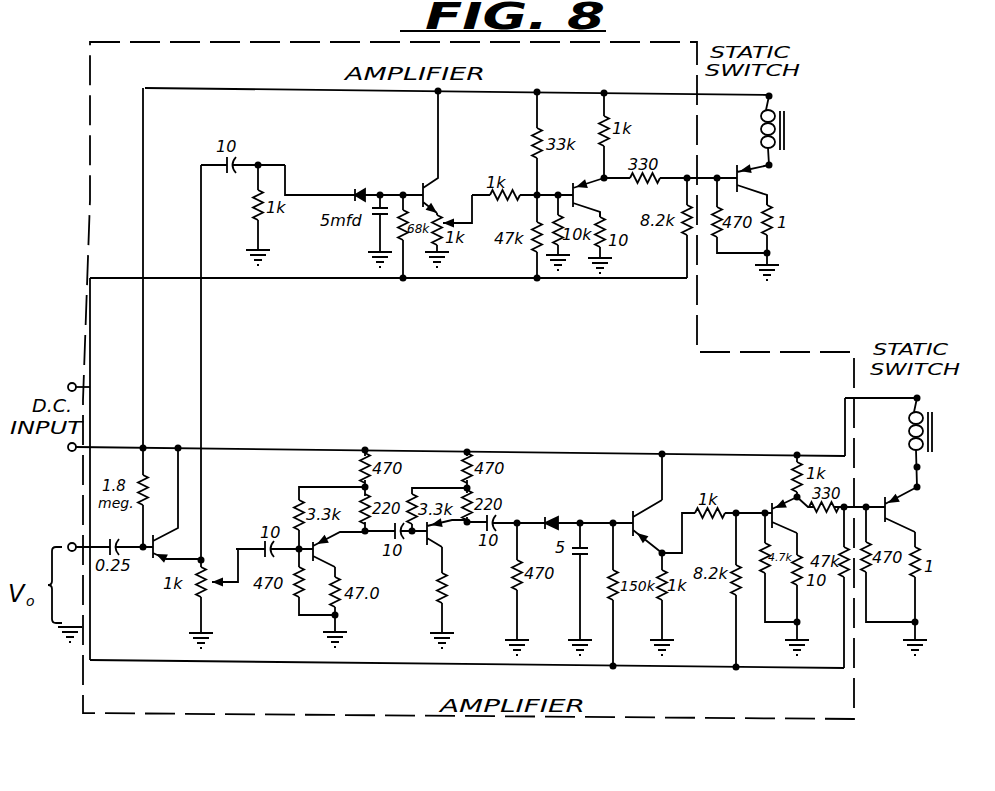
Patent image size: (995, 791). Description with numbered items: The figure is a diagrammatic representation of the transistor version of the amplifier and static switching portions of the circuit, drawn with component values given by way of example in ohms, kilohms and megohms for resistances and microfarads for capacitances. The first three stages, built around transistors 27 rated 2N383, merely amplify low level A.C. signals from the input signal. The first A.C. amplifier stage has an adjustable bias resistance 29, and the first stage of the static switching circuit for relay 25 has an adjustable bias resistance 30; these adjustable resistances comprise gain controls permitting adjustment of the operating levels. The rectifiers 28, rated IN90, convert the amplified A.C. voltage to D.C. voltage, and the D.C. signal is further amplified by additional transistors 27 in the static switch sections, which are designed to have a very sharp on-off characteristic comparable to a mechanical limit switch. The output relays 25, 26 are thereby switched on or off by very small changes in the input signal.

The relay 25 is at (773, 107).
The relay 26 is at (919, 408).
The transistor 27 is at (422, 186).
The rectifier 28 is at (362, 189).
The adjustable bias resistance 29 is at (213, 576).
The adjustable bias resistance 30 is at (444, 216).